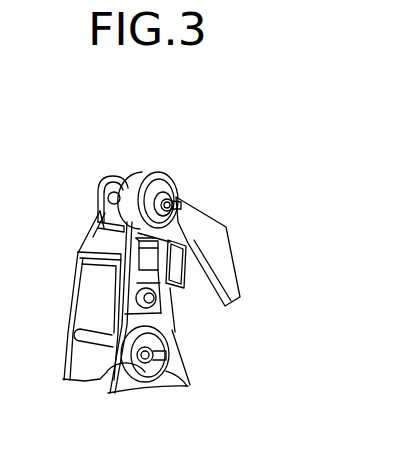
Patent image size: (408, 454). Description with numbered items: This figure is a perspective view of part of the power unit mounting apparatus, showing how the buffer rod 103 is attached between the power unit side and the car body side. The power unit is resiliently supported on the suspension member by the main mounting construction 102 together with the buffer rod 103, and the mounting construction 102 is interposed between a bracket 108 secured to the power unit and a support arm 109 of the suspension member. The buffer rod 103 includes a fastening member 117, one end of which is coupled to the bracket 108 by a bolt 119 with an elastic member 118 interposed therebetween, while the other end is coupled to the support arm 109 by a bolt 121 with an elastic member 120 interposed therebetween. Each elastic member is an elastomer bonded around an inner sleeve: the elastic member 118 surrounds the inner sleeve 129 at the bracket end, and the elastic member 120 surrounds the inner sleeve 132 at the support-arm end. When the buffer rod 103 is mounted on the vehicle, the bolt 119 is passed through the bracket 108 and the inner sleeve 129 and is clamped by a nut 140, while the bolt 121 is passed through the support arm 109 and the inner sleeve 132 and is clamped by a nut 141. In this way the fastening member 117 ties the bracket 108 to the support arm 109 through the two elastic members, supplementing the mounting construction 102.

The main mounting construction 102 is at (113, 238).
The buffer rod 103 is at (143, 160).
The bracket 108 is at (227, 282).
The support arm 109 is at (175, 332).
The fastening member 117 is at (126, 254).
The elastic member 118 is at (118, 182).
The bolt 119 is at (178, 209).
The elastic member 120 is at (102, 378).
The bolt 121 is at (167, 360).
The inner sleeve 129 is at (172, 182).
The inner sleeve 132 is at (140, 375).
The nut 140 is at (177, 197).
The nut 141 is at (157, 378).